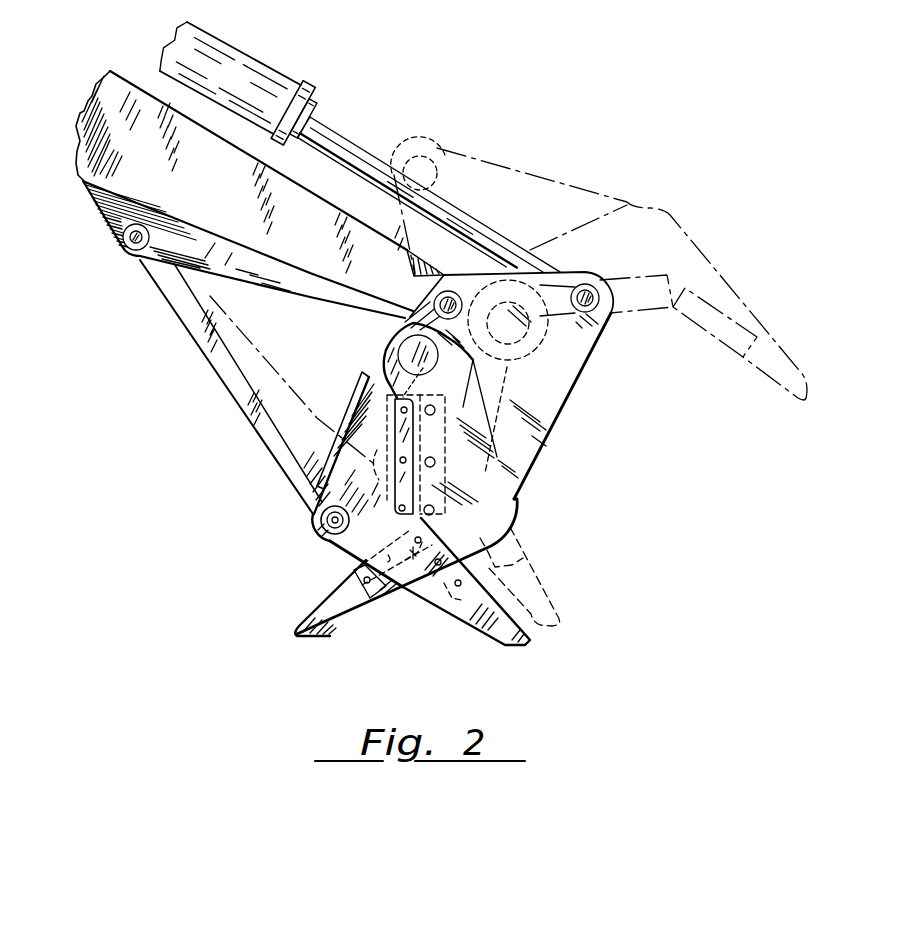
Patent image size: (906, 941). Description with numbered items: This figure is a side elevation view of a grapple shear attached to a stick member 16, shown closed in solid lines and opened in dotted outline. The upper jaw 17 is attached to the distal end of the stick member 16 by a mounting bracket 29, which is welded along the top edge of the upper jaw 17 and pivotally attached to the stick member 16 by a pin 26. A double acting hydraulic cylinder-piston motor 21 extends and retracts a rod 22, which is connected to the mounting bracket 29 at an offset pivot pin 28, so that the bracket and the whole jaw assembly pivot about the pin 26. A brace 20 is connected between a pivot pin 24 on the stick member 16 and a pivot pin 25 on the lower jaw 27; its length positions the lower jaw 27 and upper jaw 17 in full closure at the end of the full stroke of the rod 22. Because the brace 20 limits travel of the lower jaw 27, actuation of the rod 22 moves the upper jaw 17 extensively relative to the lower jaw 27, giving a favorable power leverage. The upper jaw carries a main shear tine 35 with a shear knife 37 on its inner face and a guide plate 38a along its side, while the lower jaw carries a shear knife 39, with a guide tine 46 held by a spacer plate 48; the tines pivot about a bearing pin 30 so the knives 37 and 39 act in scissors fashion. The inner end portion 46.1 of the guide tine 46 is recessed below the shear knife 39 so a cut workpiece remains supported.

The stick member 16 is at (103, 78).
The upper jaw 17 is at (517, 520).
The brace 20 is at (213, 368).
The motor 21 is at (227, 43).
The rod 22 is at (338, 132).
The pivot pin 24 is at (124, 247).
The pivot pin 25 is at (320, 520).
The pin 26 is at (440, 297).
The lower jaw 27 is at (306, 534).
The pivot pin 28 is at (585, 288).
The mounting bracket 29 is at (562, 407).
The bearing pin 30 is at (402, 330).
The main shear tine 35 is at (303, 625).
The shear knife 37 is at (433, 391).
The guide plate 38a is at (357, 567).
The shear knife 39 is at (400, 427).
The guide tine 46 is at (472, 628).
The inner end portion 46.1 is at (400, 468).
The spacer plate 48 is at (333, 453).